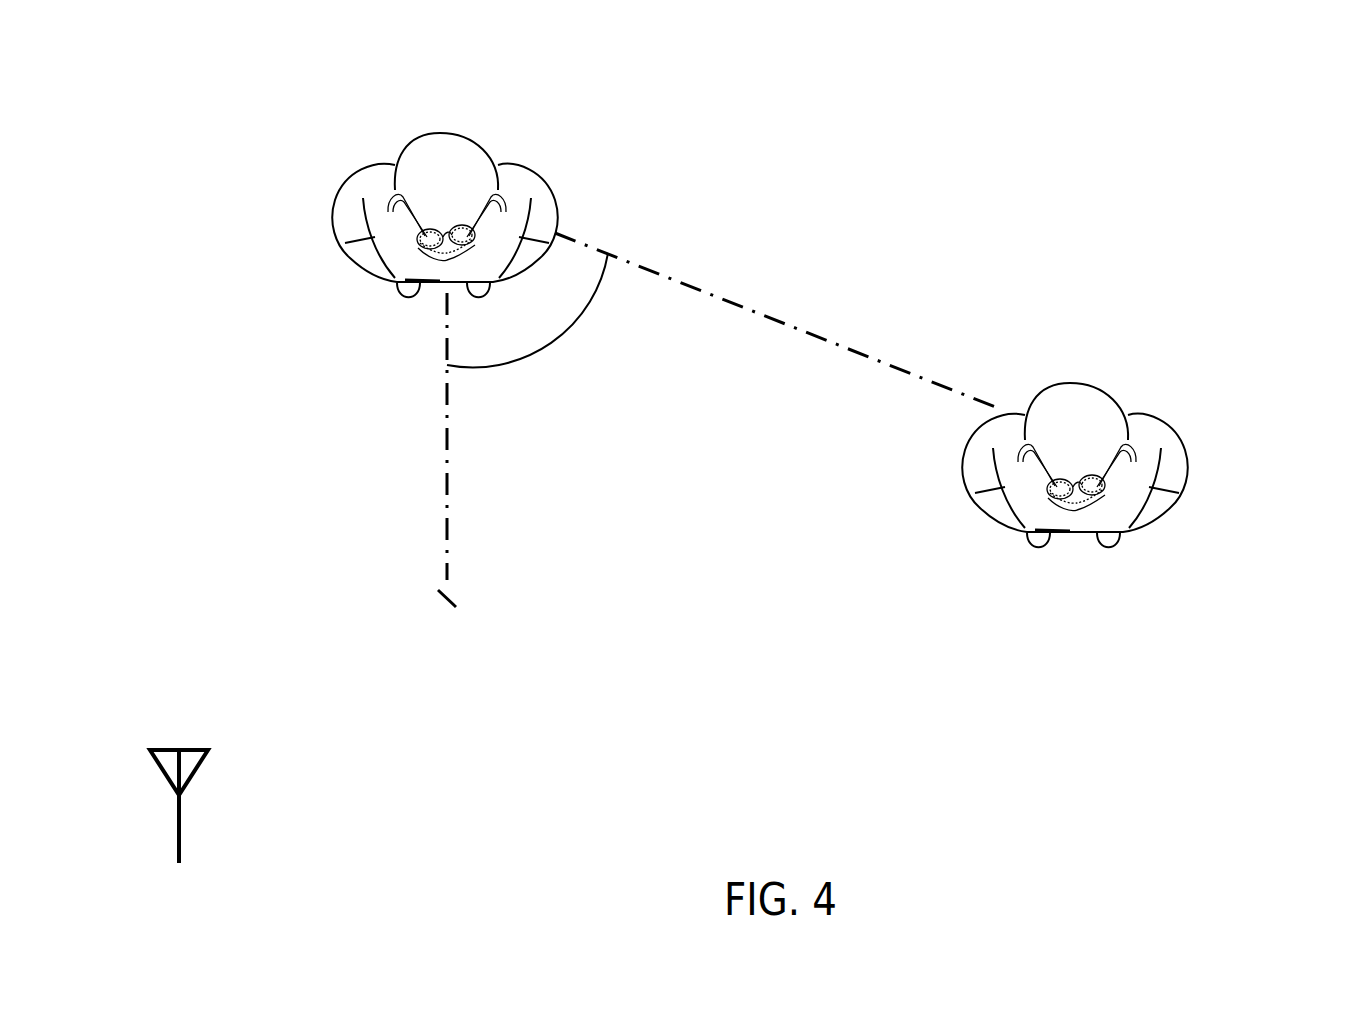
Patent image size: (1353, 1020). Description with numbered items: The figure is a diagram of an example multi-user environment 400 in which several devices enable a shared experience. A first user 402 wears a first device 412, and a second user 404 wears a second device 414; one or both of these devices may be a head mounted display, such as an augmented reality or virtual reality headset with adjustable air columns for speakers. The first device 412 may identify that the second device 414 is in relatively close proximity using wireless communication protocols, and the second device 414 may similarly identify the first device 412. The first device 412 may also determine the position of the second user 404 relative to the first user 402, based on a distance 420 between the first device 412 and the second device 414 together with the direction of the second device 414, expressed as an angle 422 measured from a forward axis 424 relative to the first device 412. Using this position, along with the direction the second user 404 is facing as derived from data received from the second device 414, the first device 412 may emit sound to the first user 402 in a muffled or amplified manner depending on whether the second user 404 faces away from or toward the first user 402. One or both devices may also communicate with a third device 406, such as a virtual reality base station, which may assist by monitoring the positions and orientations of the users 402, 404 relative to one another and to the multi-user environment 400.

The multi-user environment 400 is at (1228, 56).
The first user 402 is at (437, 215).
The second user 404 is at (1066, 461).
The third device 406 is at (185, 747).
The first device 412 is at (422, 243).
The second device 414 is at (1052, 493).
The distance 420 is at (757, 312).
The angle 422 is at (570, 327).
The forward axis 424 is at (447, 512).